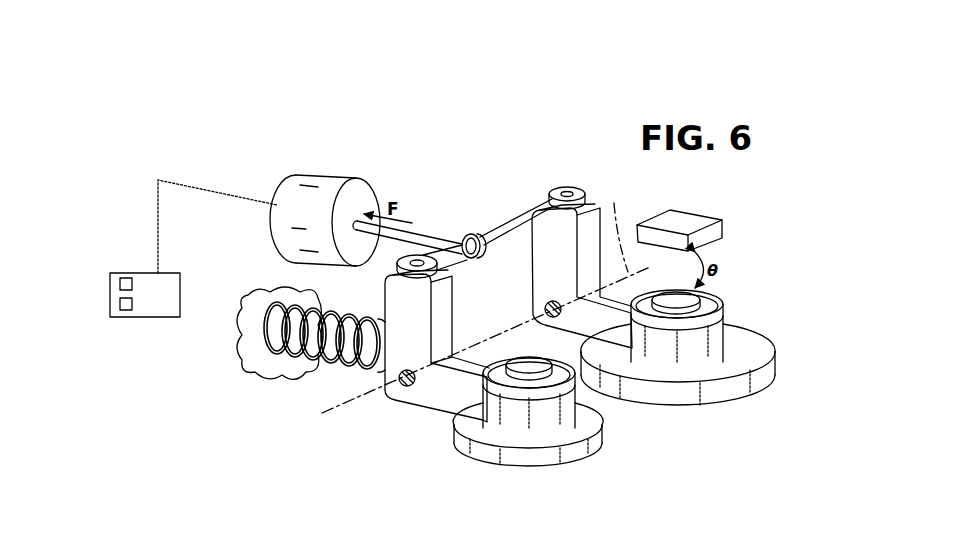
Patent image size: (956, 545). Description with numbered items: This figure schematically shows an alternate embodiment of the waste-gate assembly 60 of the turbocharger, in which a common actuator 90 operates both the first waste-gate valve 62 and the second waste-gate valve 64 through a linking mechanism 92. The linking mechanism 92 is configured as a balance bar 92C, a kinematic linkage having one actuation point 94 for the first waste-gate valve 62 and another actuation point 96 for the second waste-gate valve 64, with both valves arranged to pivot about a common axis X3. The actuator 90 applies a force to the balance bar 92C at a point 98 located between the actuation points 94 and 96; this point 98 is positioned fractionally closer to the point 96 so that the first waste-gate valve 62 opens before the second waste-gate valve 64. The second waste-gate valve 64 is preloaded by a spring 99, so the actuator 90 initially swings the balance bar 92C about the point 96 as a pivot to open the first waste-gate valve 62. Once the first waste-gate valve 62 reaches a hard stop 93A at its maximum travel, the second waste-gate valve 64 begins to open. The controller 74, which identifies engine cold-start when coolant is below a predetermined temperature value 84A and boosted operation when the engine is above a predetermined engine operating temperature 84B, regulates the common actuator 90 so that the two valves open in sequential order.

The waste-gate assembly 60 is at (415, 90).
The first waste-gate valve 62 is at (667, 393).
The second waste-gate valve 64 is at (510, 455).
The controller 74 is at (167, 303).
The predetermined temperature value 84A is at (119, 304).
The predetermined engine operating temperature 84B is at (119, 284).
The common actuator 90 is at (318, 174).
The linking mechanism 92 is at (516, 162).
The balance bar 92C is at (510, 200).
The hard stop 93A is at (735, 226).
The actuation point 94 is at (568, 189).
The actuation point 96 is at (398, 265).
The point 98 is at (466, 210).
The spring 99 is at (316, 372).
The common axis X3 is at (615, 227).